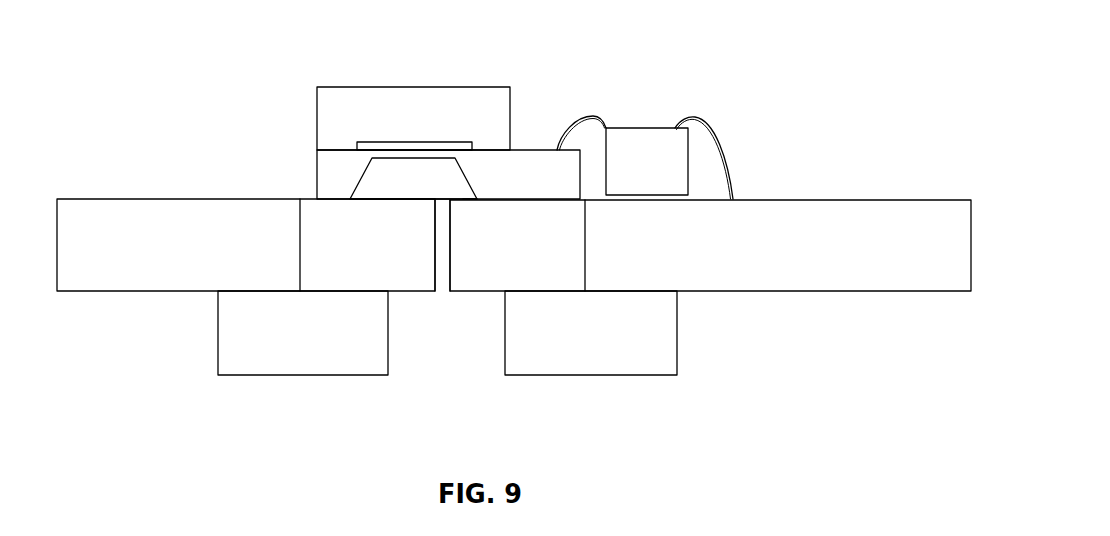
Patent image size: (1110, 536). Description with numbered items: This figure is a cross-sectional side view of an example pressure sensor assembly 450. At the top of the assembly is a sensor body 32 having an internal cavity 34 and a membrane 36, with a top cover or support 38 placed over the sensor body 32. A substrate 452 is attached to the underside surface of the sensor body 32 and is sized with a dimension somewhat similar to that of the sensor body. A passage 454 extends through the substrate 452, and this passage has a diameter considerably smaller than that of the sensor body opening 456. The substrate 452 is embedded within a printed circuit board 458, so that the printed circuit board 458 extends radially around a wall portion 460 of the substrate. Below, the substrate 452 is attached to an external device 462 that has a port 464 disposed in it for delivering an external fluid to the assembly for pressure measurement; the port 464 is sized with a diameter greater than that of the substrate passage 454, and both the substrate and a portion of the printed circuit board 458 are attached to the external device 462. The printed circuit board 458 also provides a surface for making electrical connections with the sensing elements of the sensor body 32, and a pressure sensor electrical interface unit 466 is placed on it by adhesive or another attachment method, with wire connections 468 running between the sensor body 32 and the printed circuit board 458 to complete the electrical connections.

The sensor body 32 is at (327, 172).
The internal cavity 34 is at (450, 173).
The membrane 36 is at (397, 155).
The top cover or support 38 is at (482, 95).
The pressure sensor assembly 450 is at (699, 64).
The substrate 452 is at (327, 235).
The passage 454 is at (443, 252).
The sensor body opening 456 is at (463, 200).
The printed circuit board 458 is at (106, 217).
The wall portion 460 is at (585, 253).
The external device 462 is at (627, 368).
The port 464 is at (418, 363).
The pressure sensor electrical interface unit 466 is at (637, 148).
The wire connections 468 is at (597, 115).